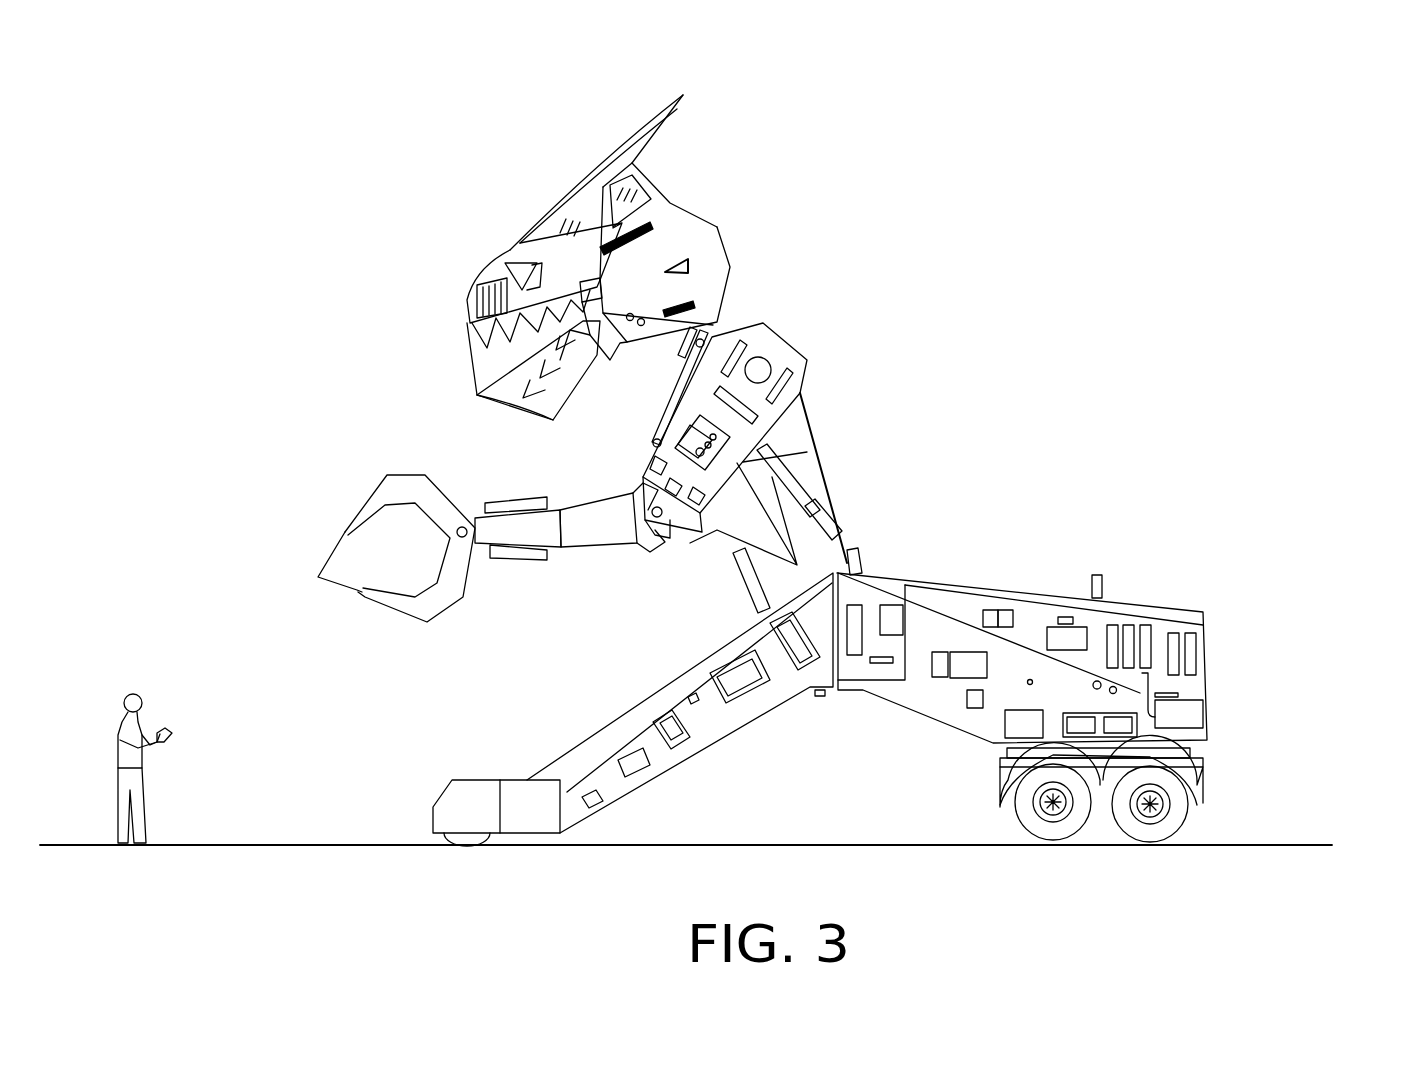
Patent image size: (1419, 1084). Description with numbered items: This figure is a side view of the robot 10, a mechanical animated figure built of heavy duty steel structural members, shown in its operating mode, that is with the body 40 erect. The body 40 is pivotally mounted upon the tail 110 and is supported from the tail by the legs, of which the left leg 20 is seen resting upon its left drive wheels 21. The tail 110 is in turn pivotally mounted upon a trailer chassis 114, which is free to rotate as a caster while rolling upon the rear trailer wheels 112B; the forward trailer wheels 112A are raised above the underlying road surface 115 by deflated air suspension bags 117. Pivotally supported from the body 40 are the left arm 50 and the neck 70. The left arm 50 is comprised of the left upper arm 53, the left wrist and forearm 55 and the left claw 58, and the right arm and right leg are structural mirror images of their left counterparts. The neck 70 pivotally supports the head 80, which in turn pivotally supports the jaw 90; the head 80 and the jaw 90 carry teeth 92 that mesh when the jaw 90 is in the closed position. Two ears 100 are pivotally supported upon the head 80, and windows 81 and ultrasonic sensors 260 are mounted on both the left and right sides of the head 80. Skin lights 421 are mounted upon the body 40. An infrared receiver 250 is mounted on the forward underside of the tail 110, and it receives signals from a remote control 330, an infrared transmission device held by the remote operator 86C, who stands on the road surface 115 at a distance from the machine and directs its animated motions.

The robot 10 is at (903, 340).
The left leg 20 is at (661, 690).
The left drive wheels 21 is at (470, 848).
The body 40 is at (823, 463).
The left arm 50 is at (599, 560).
The left upper arm 53 is at (643, 478).
The left wrist and forearm 55 is at (525, 540).
The left claw 58 is at (320, 580).
The neck 70 is at (695, 402).
The head 80 is at (594, 255).
The windows 81 is at (568, 228).
The jaw 90 is at (553, 421).
The teeth 92 is at (478, 396).
The ears 100 is at (690, 98).
The tail 110 is at (1168, 605).
The forward trailer wheels 112A is at (1051, 842).
The rear trailer wheels 112B is at (1150, 843).
The trailer chassis 114 is at (1193, 753).
The road surface 115 is at (1316, 845).
The air suspension bags 117 is at (1190, 771).
The infrared receiver 250 is at (819, 696).
The ultrasonic sensors 260 is at (527, 256).
The remote control 330 is at (172, 733).
The skin lights 421 is at (665, 430).
The remote operator 86C is at (130, 694).